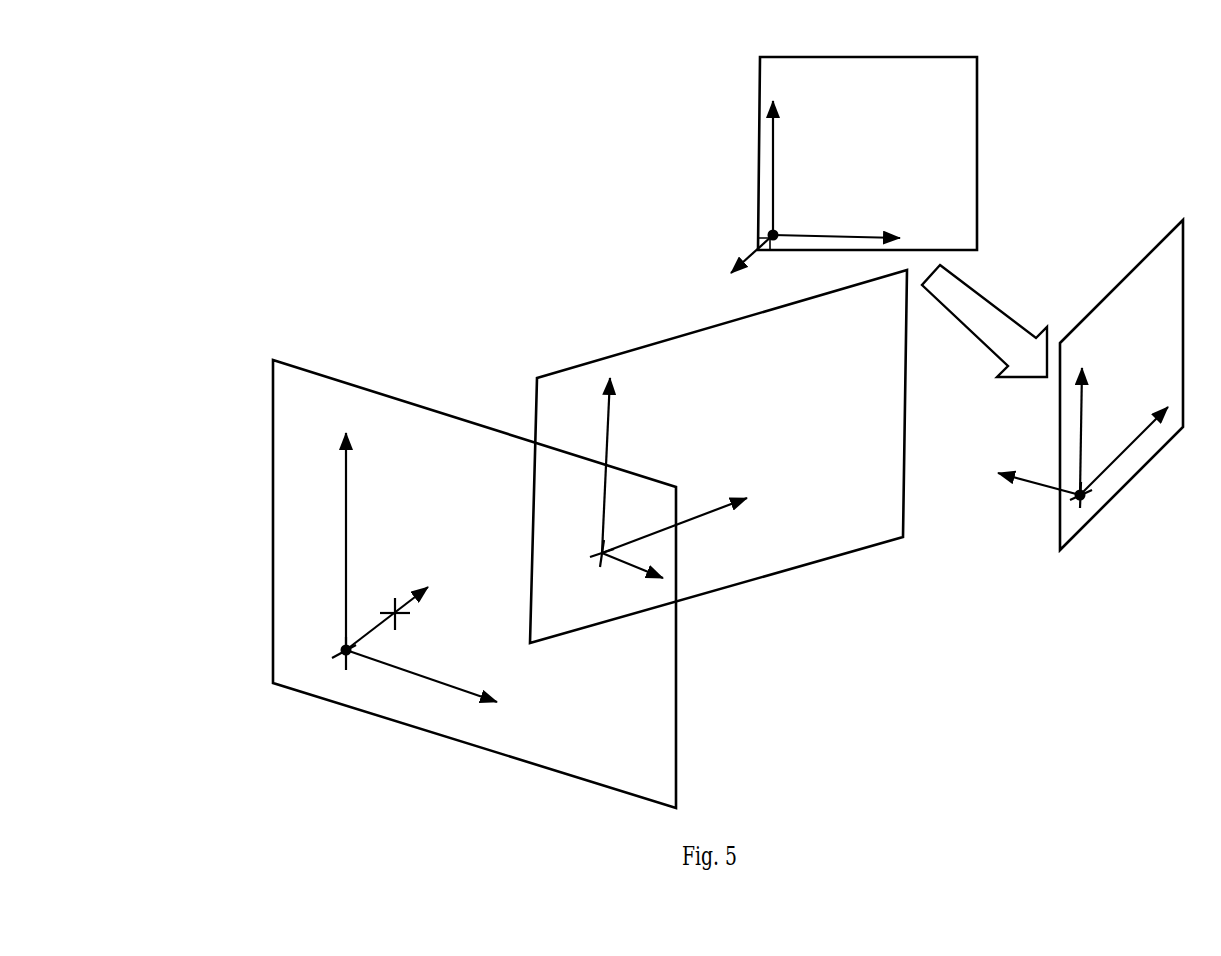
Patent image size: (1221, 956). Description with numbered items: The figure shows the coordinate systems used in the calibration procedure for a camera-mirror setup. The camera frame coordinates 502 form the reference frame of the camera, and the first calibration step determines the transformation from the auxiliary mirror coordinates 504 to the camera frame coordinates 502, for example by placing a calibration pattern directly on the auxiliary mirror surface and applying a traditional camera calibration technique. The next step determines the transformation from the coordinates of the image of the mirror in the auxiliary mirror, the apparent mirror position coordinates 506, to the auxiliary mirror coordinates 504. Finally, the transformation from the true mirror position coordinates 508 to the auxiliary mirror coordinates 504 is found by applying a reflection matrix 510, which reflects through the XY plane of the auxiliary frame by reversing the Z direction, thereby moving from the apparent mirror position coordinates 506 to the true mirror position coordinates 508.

The camera frame coordinates 502 is at (474, 584).
The auxiliary mirror coordinates 504 is at (682, 453).
The apparent mirror position coordinates 506 is at (934, 160).
The true mirror position coordinates 508 is at (1087, 461).
The reflection matrix 510 is at (999, 317).